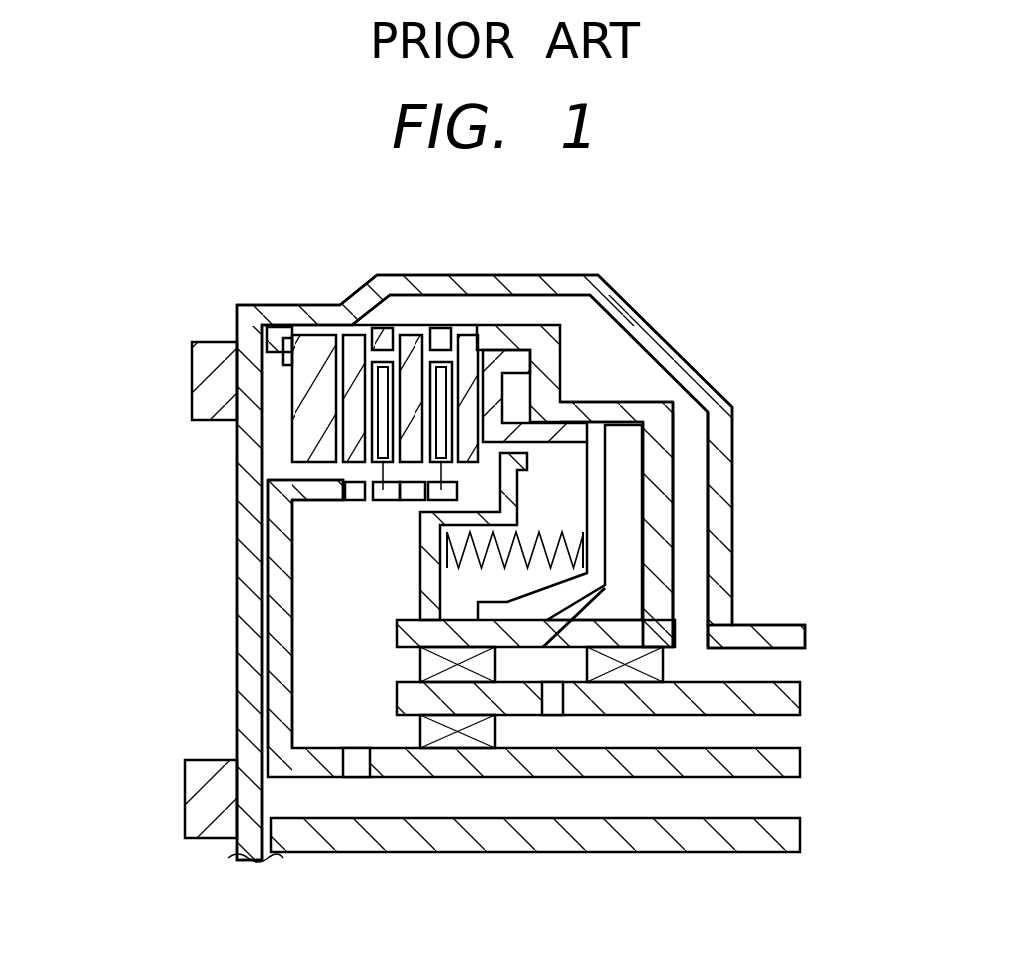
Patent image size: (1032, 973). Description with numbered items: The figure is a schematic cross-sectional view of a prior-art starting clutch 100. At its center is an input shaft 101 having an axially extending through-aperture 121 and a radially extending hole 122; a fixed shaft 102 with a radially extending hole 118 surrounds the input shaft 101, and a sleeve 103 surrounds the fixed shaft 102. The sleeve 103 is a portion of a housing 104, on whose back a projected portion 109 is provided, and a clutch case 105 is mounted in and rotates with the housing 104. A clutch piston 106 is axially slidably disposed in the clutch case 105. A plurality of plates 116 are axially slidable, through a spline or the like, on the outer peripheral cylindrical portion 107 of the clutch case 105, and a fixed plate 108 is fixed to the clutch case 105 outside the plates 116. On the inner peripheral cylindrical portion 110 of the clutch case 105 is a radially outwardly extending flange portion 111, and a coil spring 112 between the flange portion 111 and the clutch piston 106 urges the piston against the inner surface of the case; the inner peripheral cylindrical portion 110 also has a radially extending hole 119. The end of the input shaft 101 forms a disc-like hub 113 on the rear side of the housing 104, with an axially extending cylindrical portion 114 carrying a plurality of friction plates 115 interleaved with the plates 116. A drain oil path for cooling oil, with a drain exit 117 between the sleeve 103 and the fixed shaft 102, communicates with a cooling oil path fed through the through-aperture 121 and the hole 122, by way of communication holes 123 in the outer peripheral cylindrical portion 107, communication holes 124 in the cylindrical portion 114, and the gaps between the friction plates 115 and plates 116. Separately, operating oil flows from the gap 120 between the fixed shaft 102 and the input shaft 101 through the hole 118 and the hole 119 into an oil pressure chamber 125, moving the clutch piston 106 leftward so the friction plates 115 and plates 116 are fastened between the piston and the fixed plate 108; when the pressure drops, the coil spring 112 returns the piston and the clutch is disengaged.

The starting clutch 100 is at (670, 258).
The input shaft 101 is at (798, 760).
The fixed shaft 102 is at (797, 697).
The sleeve 103 is at (793, 637).
The housing 104 is at (722, 513).
The clutch case 105 is at (662, 433).
The clutch piston 106 is at (600, 483).
The outer peripheral cylindrical portion 107 is at (547, 323).
The fixed plate 108 is at (302, 435).
The projected portion 109 is at (198, 387).
The inner peripheral cylindrical portion 110 is at (655, 633).
The flange portion 111 is at (430, 580).
The coil spring 112 is at (440, 557).
The hub 113 is at (273, 635).
The cylindrical portion 114 is at (280, 500).
The friction plates 115 is at (375, 375).
The plates 116 is at (352, 338).
The drain exit 117 is at (792, 667).
The hole 118 is at (553, 705).
The hole 119 is at (622, 590).
The gap 120 is at (797, 732).
The through-aperture 121 is at (797, 802).
The hole 122 is at (357, 767).
The communication holes 123 is at (385, 355).
The communication holes 124 is at (410, 492).
The oil pressure chamber 125 is at (645, 410).